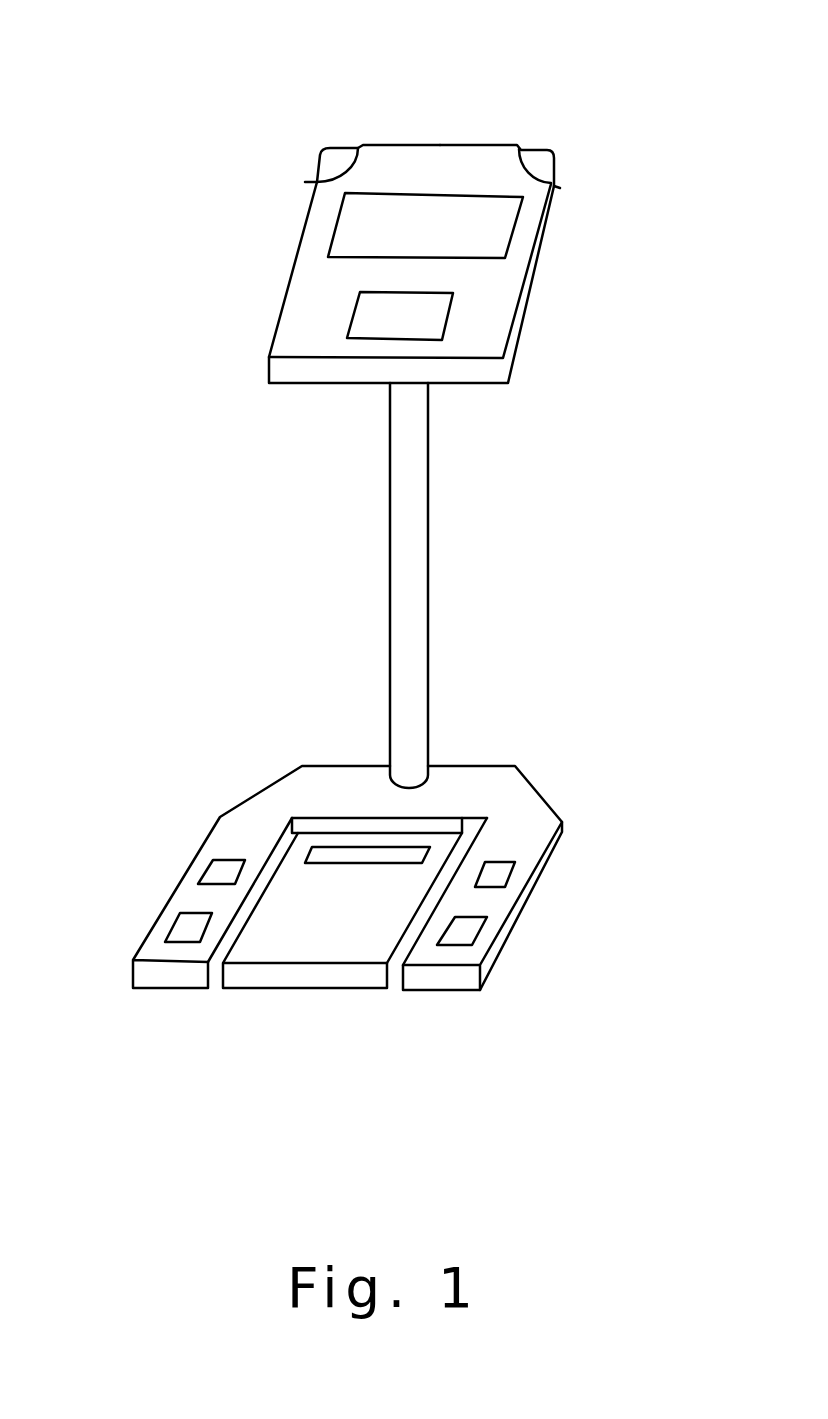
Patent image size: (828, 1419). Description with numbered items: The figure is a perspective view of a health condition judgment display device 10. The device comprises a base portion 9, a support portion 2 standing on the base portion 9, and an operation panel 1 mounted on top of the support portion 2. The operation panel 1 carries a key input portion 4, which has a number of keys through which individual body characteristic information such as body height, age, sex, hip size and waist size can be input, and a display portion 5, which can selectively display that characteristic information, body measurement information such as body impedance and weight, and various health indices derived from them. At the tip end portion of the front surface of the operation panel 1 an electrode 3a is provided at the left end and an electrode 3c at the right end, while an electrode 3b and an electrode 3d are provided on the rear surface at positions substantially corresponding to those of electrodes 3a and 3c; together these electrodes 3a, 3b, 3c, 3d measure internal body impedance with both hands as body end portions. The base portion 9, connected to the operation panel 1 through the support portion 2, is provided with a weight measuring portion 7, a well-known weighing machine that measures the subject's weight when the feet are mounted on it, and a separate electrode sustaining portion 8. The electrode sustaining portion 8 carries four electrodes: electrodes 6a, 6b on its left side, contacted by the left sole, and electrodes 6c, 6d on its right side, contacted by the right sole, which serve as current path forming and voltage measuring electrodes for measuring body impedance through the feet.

The health condition judgment display device 10 is at (533, 95).
The operation panel 1 is at (442, 278).
The support portion 2 is at (417, 628).
The electrode 3a is at (335, 160).
The electrode 3b is at (302, 182).
The electrode 3c is at (533, 160).
The electrode 3d is at (563, 189).
The key input portion 4 is at (420, 317).
The display portion 5 is at (405, 225).
The electrode 6a is at (220, 870).
The electrode 6b is at (185, 927).
The electrode 6c is at (495, 875).
The electrode 6d is at (463, 933).
The weight measuring portion 7 is at (332, 942).
The electrode sustaining portion 8 is at (507, 830).
The base portion 9 is at (342, 808).